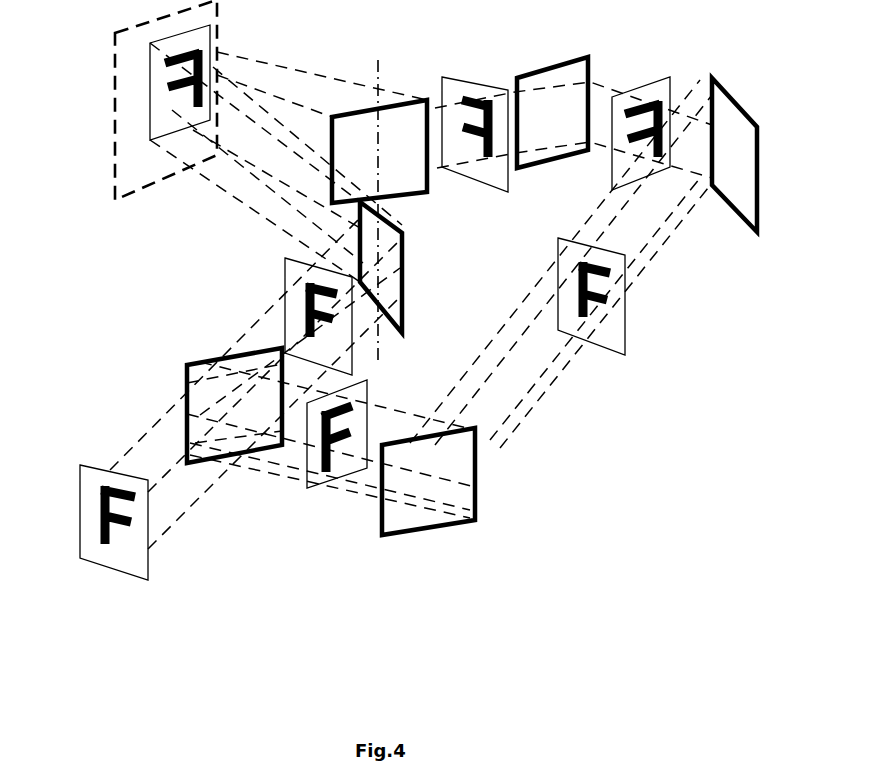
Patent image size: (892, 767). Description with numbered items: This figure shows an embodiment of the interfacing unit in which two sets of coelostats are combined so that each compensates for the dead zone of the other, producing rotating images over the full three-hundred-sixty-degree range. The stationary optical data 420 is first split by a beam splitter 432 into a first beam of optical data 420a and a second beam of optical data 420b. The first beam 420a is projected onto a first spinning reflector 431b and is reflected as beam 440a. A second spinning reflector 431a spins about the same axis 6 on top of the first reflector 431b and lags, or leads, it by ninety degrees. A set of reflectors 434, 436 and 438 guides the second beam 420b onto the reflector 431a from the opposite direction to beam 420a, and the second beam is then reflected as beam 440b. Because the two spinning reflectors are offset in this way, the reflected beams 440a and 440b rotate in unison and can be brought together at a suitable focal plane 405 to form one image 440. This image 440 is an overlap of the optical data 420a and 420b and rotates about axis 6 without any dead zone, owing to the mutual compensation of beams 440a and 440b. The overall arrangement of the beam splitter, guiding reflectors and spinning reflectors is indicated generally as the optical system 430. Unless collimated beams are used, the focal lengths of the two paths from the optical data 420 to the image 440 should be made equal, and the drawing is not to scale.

The display housing (dashed outline) 405 is at (103, 139).
The display screen with image 440 is at (156, 79).
The light rays from display to lower mirror 440a is at (241, 194).
The light rays from display to upper mirror 440b is at (332, 47).
The optical axis (dash-dot line) 6 is at (388, 68).
The upper mirror of beam combiner 431a is at (425, 88).
The lower mirror of beam combiner 431b is at (413, 288).
The mirror 438 is at (608, 62).
The mirror 436 is at (767, 195).
The intermediate image of object 420b is at (476, 196).
The image of object 420a is at (272, 306).
The first mirror 432 is at (164, 369).
The second mirror 434 is at (461, 510).
The mirror relay optical system 430 is at (682, 433).
The object (letter F) 420 is at (145, 593).